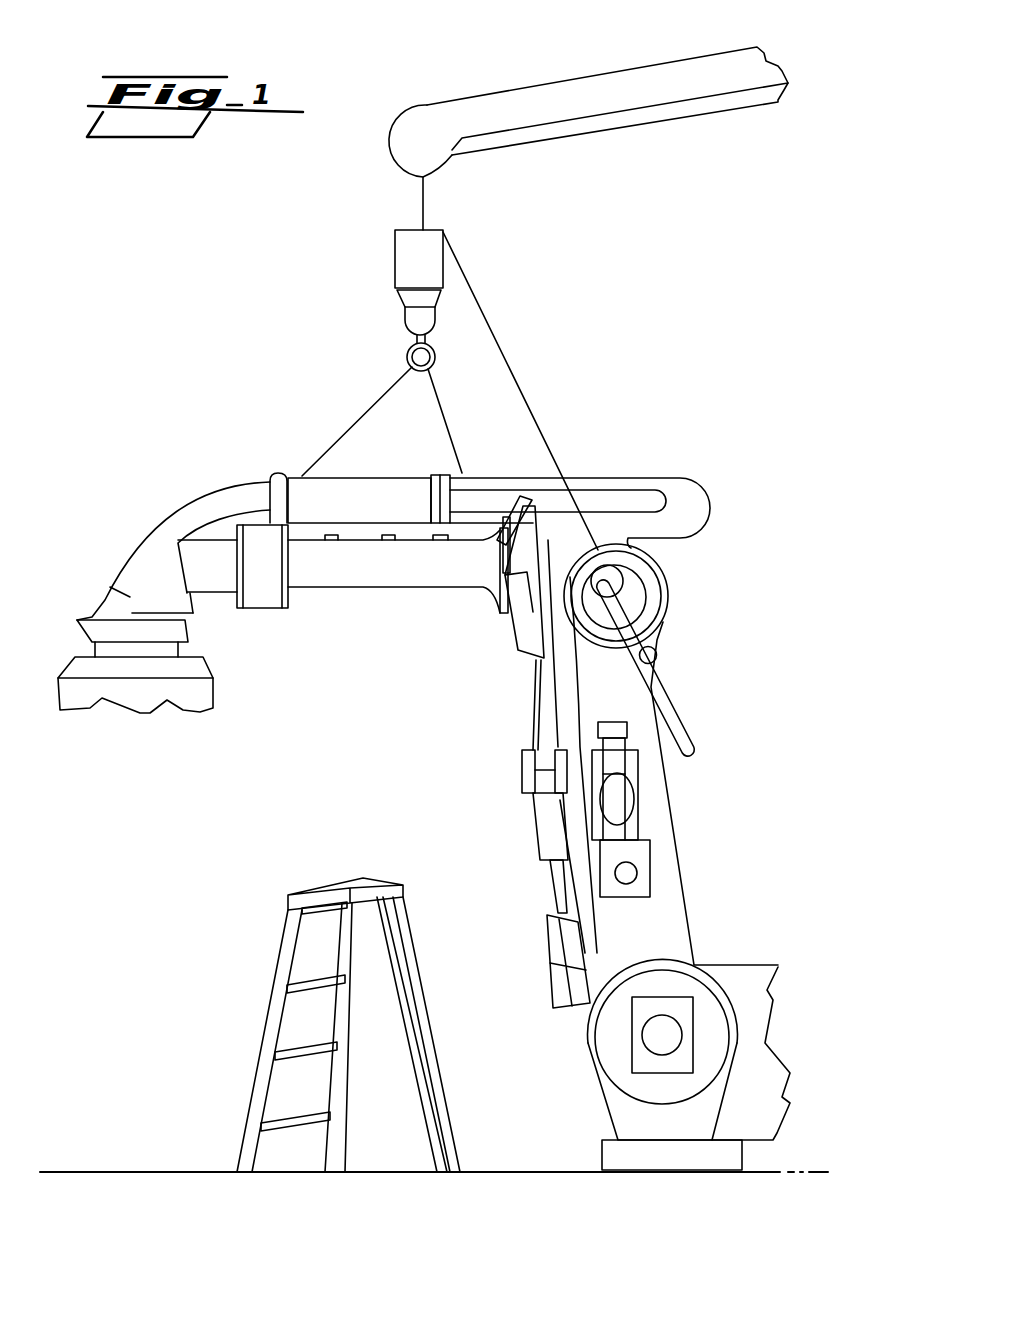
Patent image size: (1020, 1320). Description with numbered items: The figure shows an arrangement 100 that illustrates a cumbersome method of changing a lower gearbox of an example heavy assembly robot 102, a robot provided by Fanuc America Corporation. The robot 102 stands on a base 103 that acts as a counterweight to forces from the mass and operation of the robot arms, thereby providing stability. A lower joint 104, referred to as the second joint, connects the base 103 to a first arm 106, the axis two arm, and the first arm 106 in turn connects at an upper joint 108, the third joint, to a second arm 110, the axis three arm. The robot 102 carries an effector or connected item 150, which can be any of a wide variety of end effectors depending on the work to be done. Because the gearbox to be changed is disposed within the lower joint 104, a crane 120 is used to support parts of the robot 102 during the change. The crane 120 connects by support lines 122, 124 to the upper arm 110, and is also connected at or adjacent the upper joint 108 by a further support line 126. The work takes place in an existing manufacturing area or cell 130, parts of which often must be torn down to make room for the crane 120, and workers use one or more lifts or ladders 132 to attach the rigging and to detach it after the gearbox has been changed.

The arrangement 100 is at (250, 280).
The assembly robot 102 is at (697, 675).
The base 103 is at (722, 944).
The lower joint 104 is at (566, 1060).
The first arm 106 is at (667, 802).
The upper joint 108 is at (697, 569).
The second arm 110 is at (368, 588).
The crane 120 is at (595, 133).
The support line 122 is at (358, 440).
The support line 124 is at (443, 400).
The support line 126 is at (535, 415).
The manufacturing cell 130 is at (410, 728).
The ladder 132 is at (297, 893).
The end effector 150 is at (180, 475).